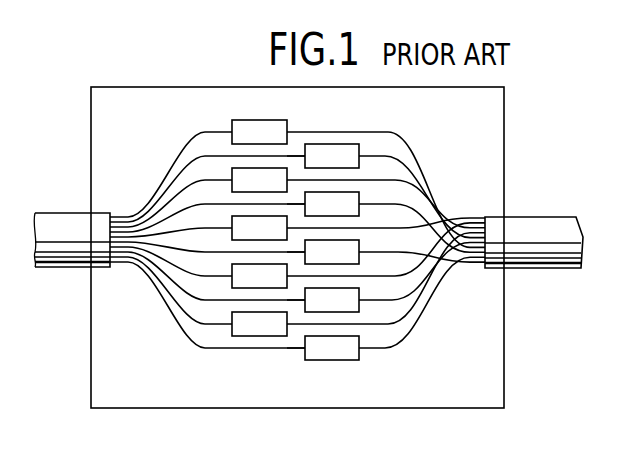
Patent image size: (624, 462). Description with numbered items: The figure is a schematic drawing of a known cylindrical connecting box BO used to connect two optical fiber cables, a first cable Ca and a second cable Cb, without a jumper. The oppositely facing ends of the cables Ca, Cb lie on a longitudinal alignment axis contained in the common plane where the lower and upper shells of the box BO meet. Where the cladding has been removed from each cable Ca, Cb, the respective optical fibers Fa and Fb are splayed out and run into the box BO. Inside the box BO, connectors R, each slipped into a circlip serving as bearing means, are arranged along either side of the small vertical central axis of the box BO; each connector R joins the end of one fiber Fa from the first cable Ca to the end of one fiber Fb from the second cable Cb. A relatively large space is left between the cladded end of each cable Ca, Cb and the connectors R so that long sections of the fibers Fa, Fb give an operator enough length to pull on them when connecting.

The connecting box BO is at (504, 375).
The first cable Ca is at (48, 213).
The second cable Cb is at (528, 230).
The optical fibers of the first cable Fa is at (168, 163).
The optical fibers of the second cable Fb is at (423, 180).
The connectors R is at (252, 128).